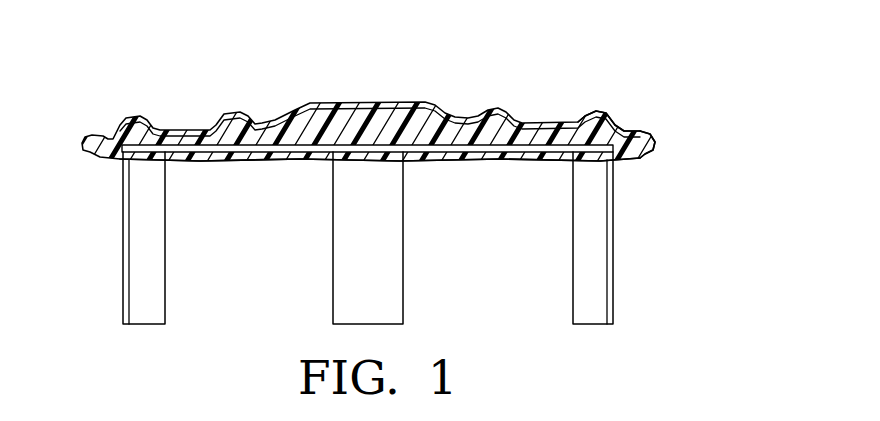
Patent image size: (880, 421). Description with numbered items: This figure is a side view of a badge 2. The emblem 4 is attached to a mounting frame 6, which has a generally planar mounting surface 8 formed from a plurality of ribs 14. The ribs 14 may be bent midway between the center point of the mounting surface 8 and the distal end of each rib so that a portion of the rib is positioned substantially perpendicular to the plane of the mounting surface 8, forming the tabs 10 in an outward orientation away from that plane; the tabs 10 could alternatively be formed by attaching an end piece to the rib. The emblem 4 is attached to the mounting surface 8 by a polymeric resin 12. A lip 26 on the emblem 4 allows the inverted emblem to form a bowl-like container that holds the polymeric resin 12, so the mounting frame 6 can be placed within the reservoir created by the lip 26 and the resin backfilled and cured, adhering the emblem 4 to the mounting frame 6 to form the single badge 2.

The badge 2 is at (272, 96).
The emblem 4 is at (452, 110).
The mounting frame 6 is at (613, 137).
The mounting surface 8 is at (508, 162).
The tabs 10 is at (598, 282).
The polymeric resin 12 is at (262, 162).
The ribs 14 is at (140, 153).
The lip 26 is at (653, 160).